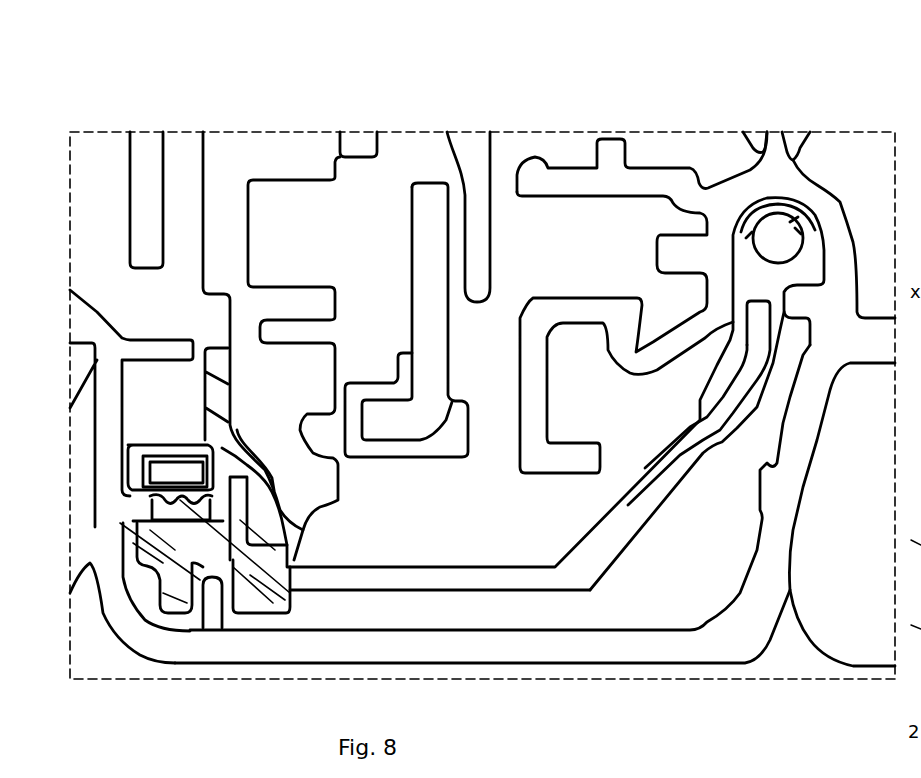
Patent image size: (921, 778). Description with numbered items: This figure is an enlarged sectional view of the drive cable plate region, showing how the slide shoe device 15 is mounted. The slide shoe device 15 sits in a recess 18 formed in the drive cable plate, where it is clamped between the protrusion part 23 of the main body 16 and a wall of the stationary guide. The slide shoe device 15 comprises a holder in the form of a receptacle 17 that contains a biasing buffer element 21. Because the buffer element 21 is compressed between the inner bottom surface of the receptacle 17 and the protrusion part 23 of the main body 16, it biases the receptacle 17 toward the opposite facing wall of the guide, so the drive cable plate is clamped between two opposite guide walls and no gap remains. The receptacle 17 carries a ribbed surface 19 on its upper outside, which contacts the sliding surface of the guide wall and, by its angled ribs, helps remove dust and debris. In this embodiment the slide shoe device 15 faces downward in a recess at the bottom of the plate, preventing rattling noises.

The slide shoe device 15 is at (195, 540).
The main body 16 is at (265, 490).
The receptacle 17 is at (255, 485).
The recess 18 is at (147, 496).
The ribbed surface 19 is at (210, 482).
The buffer element 21 is at (180, 467).
The protrusion part 23 is at (177, 468).